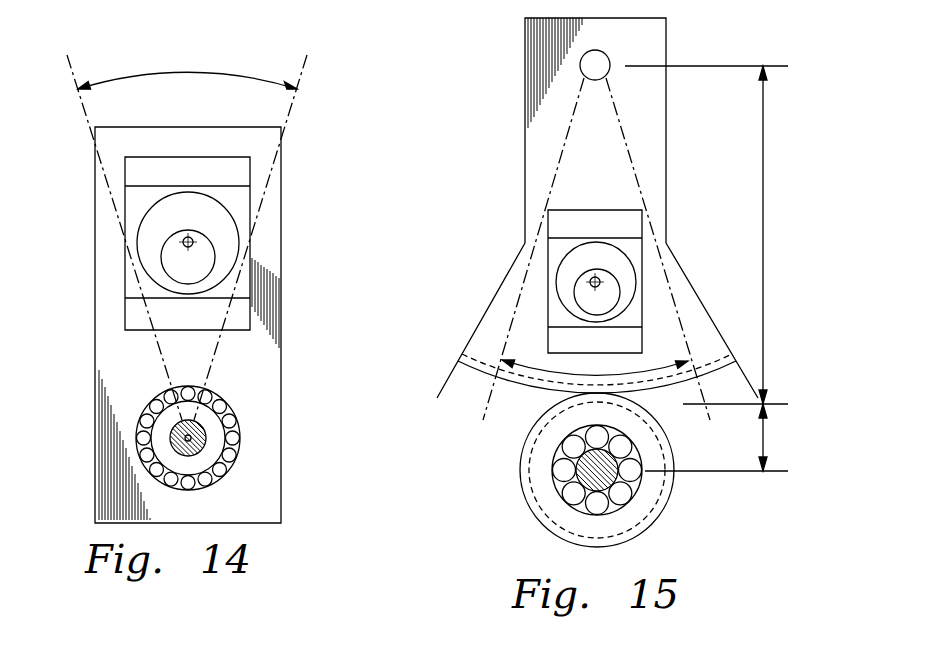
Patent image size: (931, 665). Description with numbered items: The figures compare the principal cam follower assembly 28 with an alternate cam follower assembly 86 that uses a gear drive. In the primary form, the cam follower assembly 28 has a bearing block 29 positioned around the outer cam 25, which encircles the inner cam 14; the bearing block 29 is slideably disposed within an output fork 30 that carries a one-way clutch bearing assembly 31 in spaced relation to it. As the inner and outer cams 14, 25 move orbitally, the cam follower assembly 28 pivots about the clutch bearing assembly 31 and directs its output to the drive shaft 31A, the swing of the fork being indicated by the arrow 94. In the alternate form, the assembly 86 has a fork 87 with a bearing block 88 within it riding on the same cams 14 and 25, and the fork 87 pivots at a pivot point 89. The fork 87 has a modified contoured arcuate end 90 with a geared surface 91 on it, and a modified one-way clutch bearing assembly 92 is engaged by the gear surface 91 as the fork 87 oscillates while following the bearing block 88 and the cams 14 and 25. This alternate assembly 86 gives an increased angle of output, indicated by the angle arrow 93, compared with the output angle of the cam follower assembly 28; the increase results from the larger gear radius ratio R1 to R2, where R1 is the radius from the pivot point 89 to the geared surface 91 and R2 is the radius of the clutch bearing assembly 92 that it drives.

In FIG. 14, the inner cam 14 is at (183, 268).
In FIG. 15, the inner cam 14 is at (587, 293).
In FIG. 14, the outer cam 25 is at (158, 241).
In FIG. 15, the outer cam 25 is at (572, 263).
In FIG. 14, the cam follower assembly 28 is at (312, 167).
In FIG. 14, the bearing block 29 is at (242, 287).
In FIG. 14, the output fork 30 is at (252, 385).
In FIG. 14, the one-way clutch bearing assembly 31 is at (130, 418).
In FIG. 14, the drive shaft 31A is at (187, 453).
In FIG. 14, the pivot angle 94 is at (199, 72).
In FIG. 15, the alternate cam follower assembly 86 is at (706, 46).
In FIG. 15, the fork 87 is at (657, 218).
In FIG. 15, the bearing block 88 is at (558, 312).
In FIG. 15, the pivot point 89 is at (608, 53).
In FIG. 15, the contoured arcuate end 90 is at (528, 345).
In FIG. 15, the geared surface 91 is at (475, 372).
In FIG. 15, the modified one-way clutch bearing assembly 92 is at (672, 510).
In FIG. 15, the angle arrow 93 is at (663, 364).
In FIG. 15, the gear radius R1 is at (763, 226).
In FIG. 15, the gear radius R2 is at (763, 435).